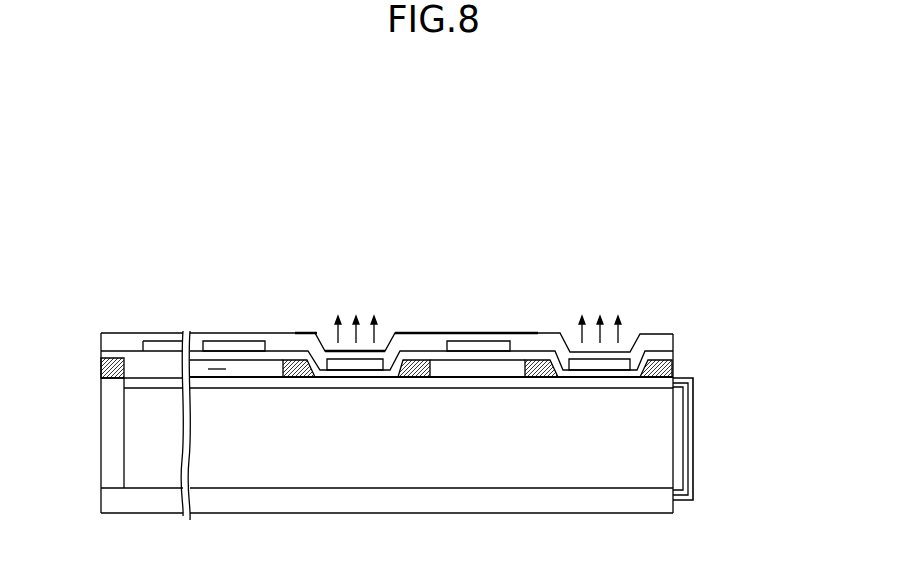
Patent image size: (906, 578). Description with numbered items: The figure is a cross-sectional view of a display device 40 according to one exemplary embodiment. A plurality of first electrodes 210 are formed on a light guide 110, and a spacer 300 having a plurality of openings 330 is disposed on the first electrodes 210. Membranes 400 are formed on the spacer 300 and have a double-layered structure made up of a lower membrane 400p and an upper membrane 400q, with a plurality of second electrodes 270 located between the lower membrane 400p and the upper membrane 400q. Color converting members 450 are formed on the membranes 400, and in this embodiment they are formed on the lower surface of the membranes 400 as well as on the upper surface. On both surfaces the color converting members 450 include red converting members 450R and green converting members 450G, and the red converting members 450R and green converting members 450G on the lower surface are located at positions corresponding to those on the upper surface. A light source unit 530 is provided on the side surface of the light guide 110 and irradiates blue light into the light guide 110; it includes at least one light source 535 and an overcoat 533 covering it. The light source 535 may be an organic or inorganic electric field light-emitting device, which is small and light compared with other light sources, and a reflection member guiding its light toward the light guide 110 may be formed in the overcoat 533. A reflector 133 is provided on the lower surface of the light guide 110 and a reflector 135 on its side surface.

The display device 40 is at (324, 220).
The light guide 110 is at (512, 468).
The reflector 133 is at (420, 493).
The reflector 135 is at (112, 437).
The first electrode 210 is at (355, 380).
The second electrode 270 is at (246, 345).
The spacer 300 is at (101, 368).
The opening 330 is at (218, 368).
The membrane 400 is at (453, 338).
The lower membrane 400p is at (662, 355).
The upper membrane 400q is at (657, 338).
The color converting member 450 is at (477, 303).
The red converting member 450R is at (397, 348).
The green converting member 450G is at (472, 330).
The light source unit 530 is at (744, 439).
The overcoat 533 is at (688, 457).
The light source 535 is at (694, 380).